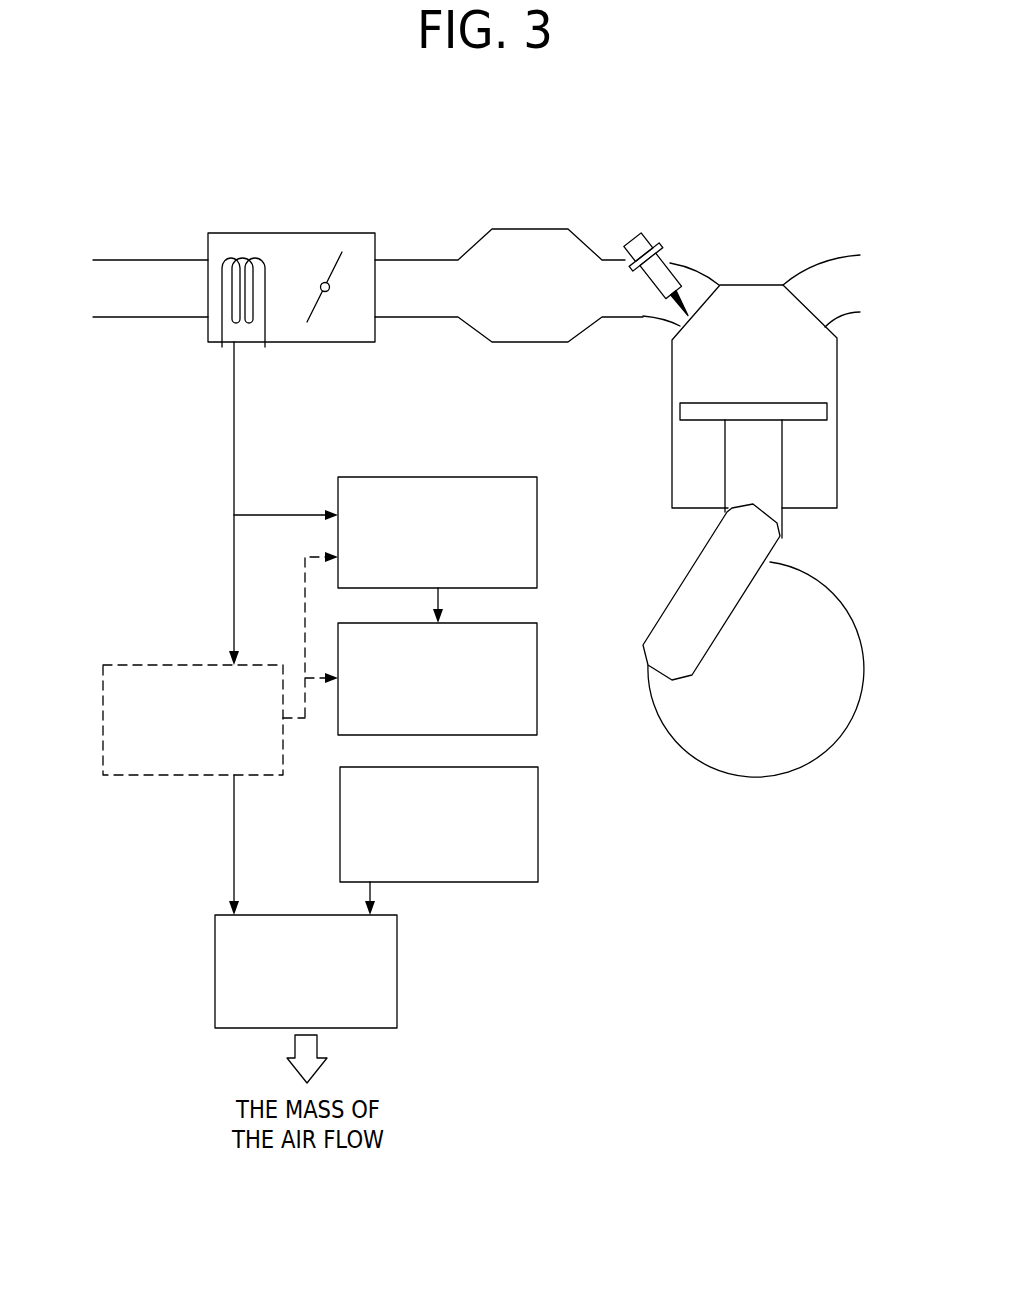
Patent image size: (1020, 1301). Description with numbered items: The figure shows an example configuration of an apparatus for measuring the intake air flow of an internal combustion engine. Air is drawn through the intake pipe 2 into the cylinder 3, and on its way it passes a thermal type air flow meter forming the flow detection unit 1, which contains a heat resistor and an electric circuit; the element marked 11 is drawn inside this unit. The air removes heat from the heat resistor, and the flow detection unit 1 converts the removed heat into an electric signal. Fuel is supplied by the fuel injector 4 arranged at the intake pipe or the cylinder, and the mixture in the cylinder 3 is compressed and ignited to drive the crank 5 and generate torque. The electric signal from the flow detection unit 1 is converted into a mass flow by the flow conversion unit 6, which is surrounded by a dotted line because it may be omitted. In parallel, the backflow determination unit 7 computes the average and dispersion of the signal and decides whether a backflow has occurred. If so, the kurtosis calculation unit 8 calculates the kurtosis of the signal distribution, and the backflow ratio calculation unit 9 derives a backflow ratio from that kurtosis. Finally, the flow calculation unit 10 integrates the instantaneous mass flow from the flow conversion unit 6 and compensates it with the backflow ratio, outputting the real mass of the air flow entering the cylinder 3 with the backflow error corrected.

The flow detection unit 1 is at (208, 329).
The intake pipe 2 is at (735, 275).
The cylinder 3 is at (825, 377).
The fuel injector 4 is at (648, 284).
The crank 5 is at (815, 740).
The flow conversion unit 6 is at (172, 775).
The backflow determination unit 7 is at (537, 533).
The kurtosis calculation unit 8 is at (537, 678).
The backflow ratio calculation unit 9 is at (538, 825).
The flow calculation unit 10 is at (215, 980).
The flow direction detecting element 11 is at (340, 268).